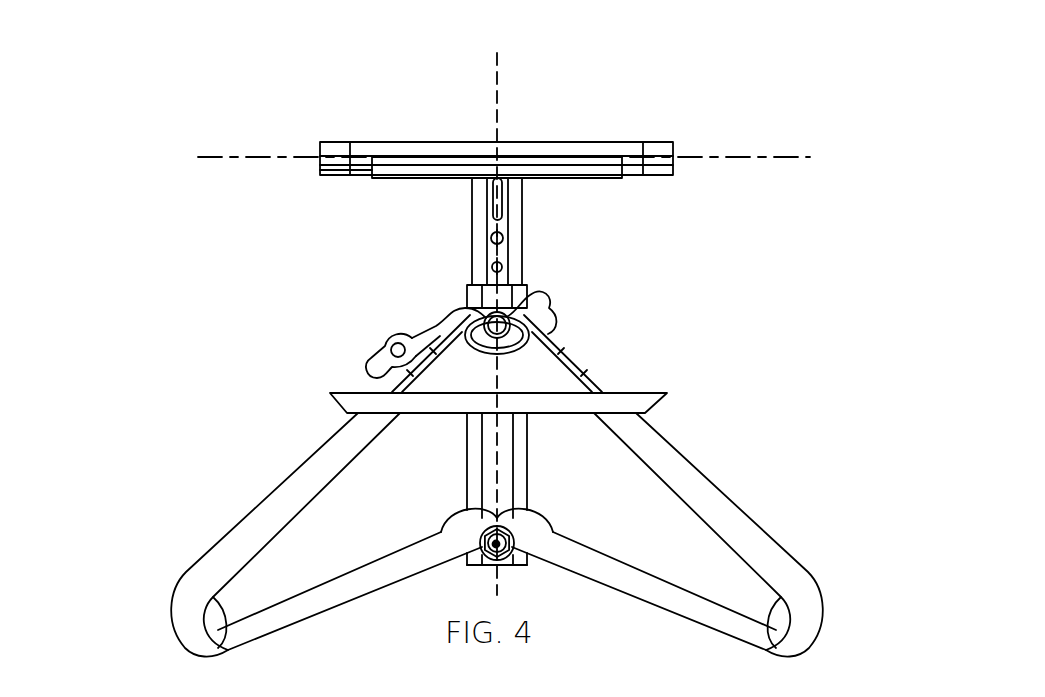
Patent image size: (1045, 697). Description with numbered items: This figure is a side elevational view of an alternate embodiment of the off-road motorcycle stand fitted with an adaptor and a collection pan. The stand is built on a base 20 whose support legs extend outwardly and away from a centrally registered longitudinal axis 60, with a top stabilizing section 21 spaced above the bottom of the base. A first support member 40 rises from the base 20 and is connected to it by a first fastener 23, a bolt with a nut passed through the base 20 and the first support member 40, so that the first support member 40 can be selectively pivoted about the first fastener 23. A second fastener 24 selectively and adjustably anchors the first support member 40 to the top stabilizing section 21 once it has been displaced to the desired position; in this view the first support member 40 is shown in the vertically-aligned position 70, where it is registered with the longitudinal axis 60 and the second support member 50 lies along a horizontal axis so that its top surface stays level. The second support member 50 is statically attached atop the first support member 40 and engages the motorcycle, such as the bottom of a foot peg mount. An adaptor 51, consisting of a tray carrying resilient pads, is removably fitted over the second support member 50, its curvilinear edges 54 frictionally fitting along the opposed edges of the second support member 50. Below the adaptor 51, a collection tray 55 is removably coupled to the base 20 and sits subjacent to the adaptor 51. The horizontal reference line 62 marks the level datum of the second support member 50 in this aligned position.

The base 20 is at (720, 427).
The top stabilizing section 21 is at (417, 315).
The first fastener 23 is at (507, 550).
The second fastener 24 is at (508, 322).
The first support member 40 is at (540, 257).
The second support member 50 is at (362, 172).
The adaptor 51 is at (375, 130).
The curvilinear edges 54 is at (603, 173).
The collection tray 55 is at (357, 398).
The centrally registered longitudinal axis 60 is at (498, 95).
The horizontal axis 62 is at (238, 158).
The vertically-aligned position 70 is at (503, 153).